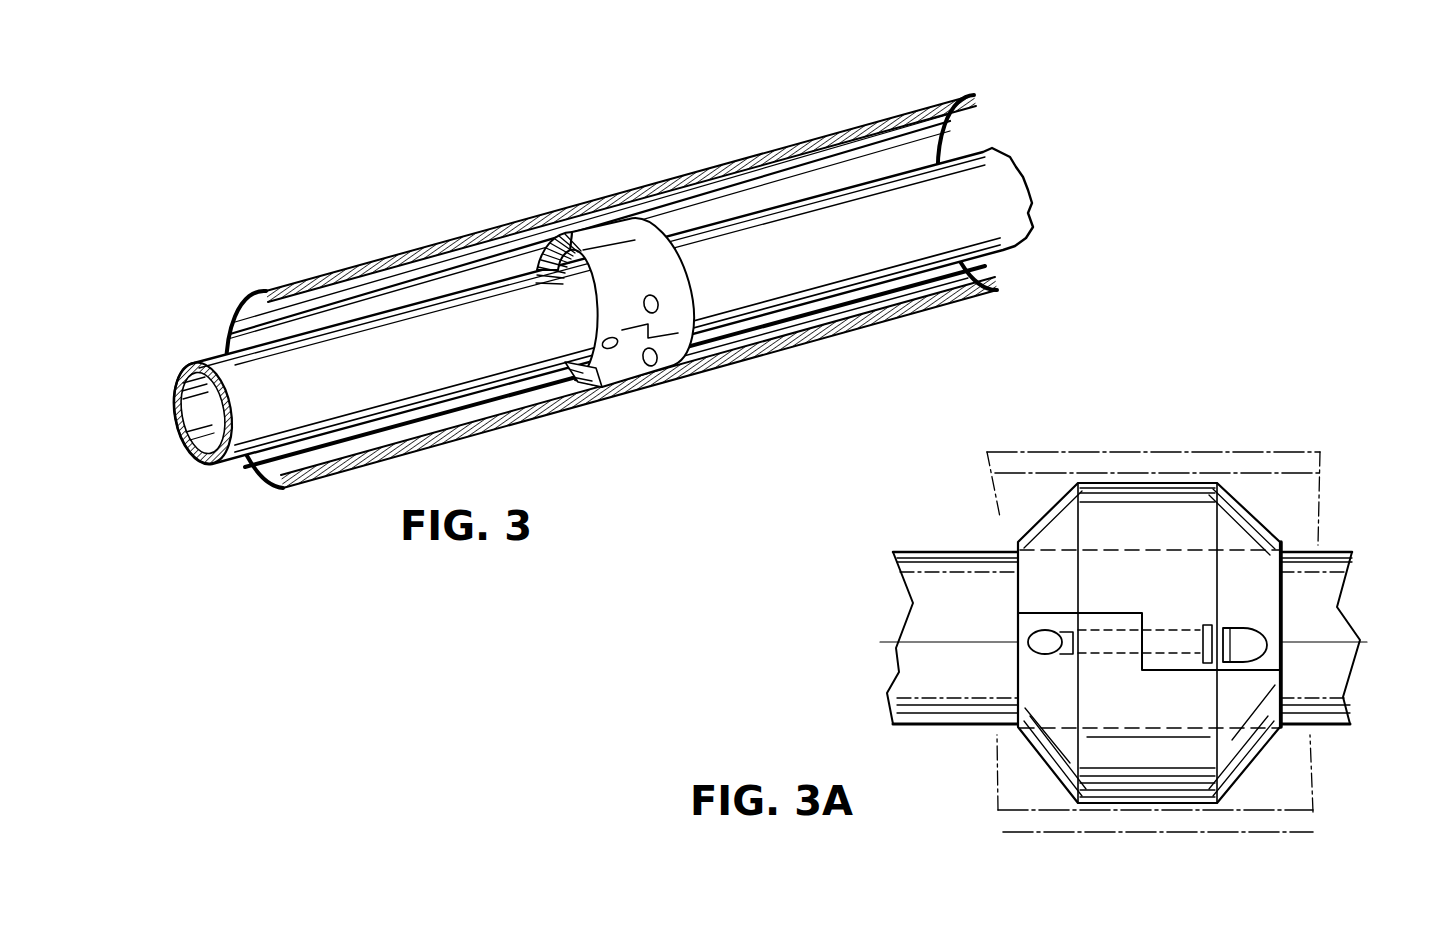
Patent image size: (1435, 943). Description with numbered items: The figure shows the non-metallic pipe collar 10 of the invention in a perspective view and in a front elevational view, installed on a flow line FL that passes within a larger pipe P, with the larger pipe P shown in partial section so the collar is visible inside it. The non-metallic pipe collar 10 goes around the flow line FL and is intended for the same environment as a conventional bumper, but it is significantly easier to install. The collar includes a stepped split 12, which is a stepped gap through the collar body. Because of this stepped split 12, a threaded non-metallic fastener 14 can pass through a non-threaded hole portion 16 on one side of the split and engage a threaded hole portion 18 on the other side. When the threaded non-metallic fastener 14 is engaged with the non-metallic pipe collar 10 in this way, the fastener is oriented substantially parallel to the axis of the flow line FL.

In FIG. 3, the pipe P is at (483, 228).
In FIG. 3A, the pipe P is at (1237, 452).
In FIG. 3, the flow line FL is at (932, 210).
In FIG. 3A, the flow line FL is at (1340, 600).
In FIG. 3, the non-metallic pipe collar 10 is at (640, 247).
In FIG. 3A, the non-metallic pipe collar 10 is at (1137, 527).
In FIG. 3A, the stepped split 12 is at (1055, 612).
In FIG. 3A, the threaded non-metallic fastener 14 is at (1212, 627).
In FIG. 3A, the non-threaded hole portion 16 is at (1183, 653).
In FIG. 3A, the threaded hole portion 18 is at (1025, 708).